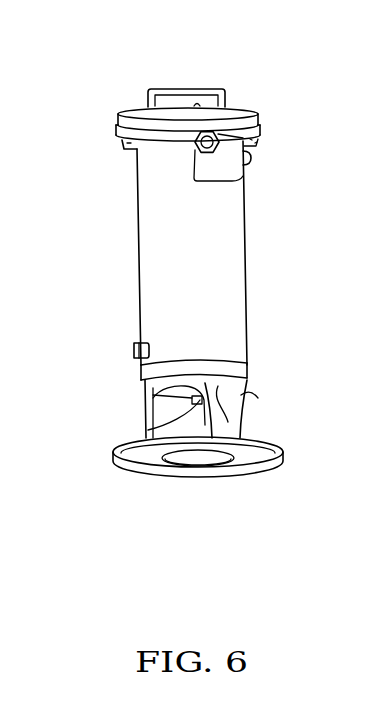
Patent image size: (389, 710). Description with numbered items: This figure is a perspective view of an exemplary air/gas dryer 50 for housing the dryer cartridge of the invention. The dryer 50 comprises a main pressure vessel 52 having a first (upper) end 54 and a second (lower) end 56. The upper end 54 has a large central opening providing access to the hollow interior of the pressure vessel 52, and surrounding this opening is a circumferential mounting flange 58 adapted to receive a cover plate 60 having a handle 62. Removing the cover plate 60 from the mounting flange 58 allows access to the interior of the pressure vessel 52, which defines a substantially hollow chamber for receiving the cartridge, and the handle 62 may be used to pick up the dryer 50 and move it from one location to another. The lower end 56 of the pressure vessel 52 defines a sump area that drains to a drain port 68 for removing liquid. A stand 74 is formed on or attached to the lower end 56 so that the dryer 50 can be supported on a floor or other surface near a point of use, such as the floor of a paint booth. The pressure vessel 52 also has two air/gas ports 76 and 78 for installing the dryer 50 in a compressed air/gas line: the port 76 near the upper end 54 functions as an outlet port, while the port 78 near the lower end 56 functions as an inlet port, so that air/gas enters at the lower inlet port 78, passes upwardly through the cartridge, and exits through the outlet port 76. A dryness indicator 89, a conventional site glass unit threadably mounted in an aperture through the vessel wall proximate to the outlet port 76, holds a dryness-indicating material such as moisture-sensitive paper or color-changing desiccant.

The dryer 50 is at (108, 245).
The main pressure vessel 52 is at (225, 262).
The first (upper) end 54 is at (262, 127).
The second (lower) end 56 is at (260, 368).
The circumferential mounting flange 58 is at (117, 136).
The cover plate 60 is at (244, 112).
The handle 62 is at (203, 88).
The drain port 68 is at (147, 425).
The stand 74 is at (233, 402).
The air/gas port (outlet port) 76 is at (251, 158).
The air/gas port (inlet port) 78 is at (134, 349).
The dryness indicator 89 is at (243, 176).